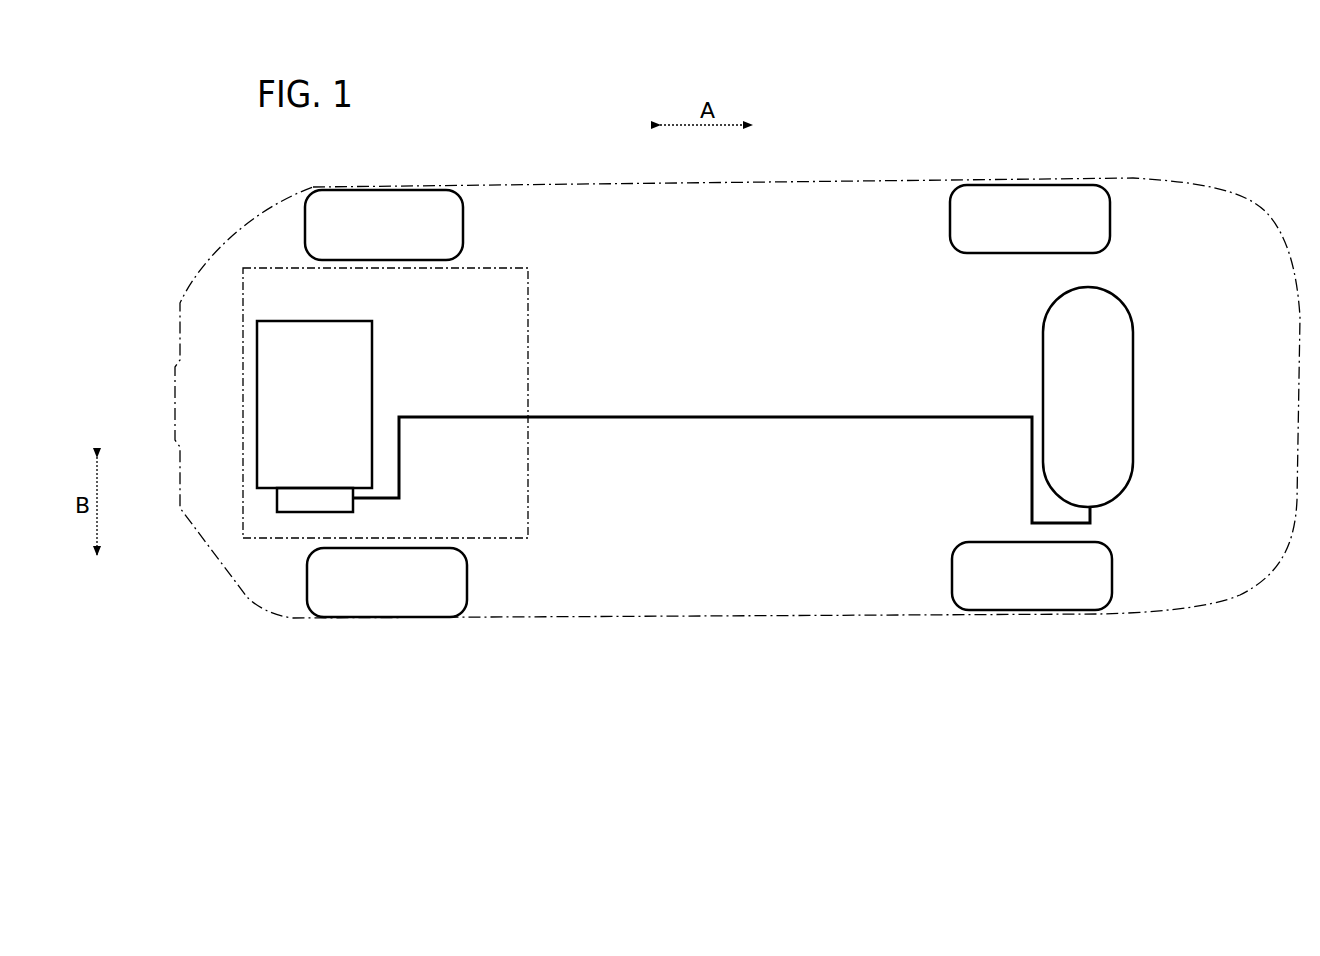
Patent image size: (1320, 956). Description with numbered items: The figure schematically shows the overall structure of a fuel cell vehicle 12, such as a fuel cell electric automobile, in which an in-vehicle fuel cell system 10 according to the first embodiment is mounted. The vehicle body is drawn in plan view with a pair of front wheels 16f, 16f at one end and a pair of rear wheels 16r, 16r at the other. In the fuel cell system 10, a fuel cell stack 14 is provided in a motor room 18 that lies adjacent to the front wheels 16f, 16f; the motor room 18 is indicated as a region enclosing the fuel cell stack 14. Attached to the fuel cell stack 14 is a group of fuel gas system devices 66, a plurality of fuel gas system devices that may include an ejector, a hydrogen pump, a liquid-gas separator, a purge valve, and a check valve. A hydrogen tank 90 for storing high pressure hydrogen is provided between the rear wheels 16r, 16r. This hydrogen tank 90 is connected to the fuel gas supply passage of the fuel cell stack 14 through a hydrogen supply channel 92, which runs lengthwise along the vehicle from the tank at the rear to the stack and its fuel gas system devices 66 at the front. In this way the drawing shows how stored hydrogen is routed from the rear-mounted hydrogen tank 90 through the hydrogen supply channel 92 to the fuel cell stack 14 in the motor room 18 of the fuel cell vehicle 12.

The fuel cell system 10 is at (230, 175).
The fuel cell vehicle 12 is at (536, 177).
The fuel cell stack 14 is at (382, 450).
The front wheels 16f is at (350, 208).
The rear wheels 16r is at (998, 205).
The motor room 18 is at (528, 460).
The group of fuel gas system devices 66 is at (291, 514).
The hydrogen tank 90 is at (1118, 388).
The hydrogen supply channel 92 is at (770, 420).